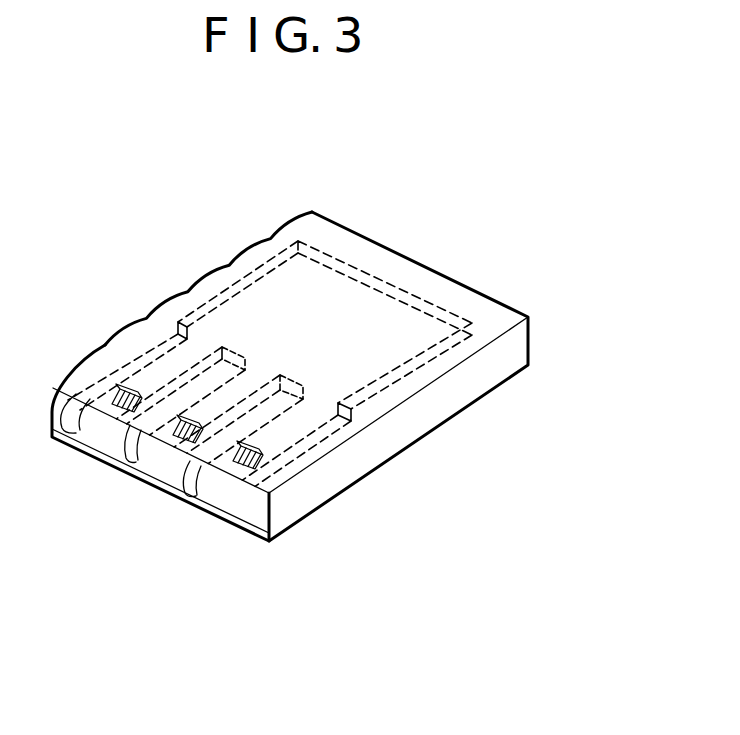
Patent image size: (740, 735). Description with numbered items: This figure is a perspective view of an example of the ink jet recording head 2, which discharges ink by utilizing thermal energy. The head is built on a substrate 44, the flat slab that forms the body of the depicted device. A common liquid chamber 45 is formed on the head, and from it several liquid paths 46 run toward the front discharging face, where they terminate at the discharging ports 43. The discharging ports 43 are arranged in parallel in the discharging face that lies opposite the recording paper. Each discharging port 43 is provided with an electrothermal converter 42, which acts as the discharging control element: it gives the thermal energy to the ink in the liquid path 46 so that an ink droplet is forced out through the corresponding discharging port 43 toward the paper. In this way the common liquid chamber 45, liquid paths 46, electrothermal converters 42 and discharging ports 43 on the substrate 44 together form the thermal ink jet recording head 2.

The recording head 2 is at (373, 452).
The electrothermal converter 42 is at (118, 420).
The discharging port 43 is at (65, 436).
The substrate 44 is at (228, 525).
The common liquid chamber 45 is at (367, 310).
The liquid path 46 is at (285, 425).